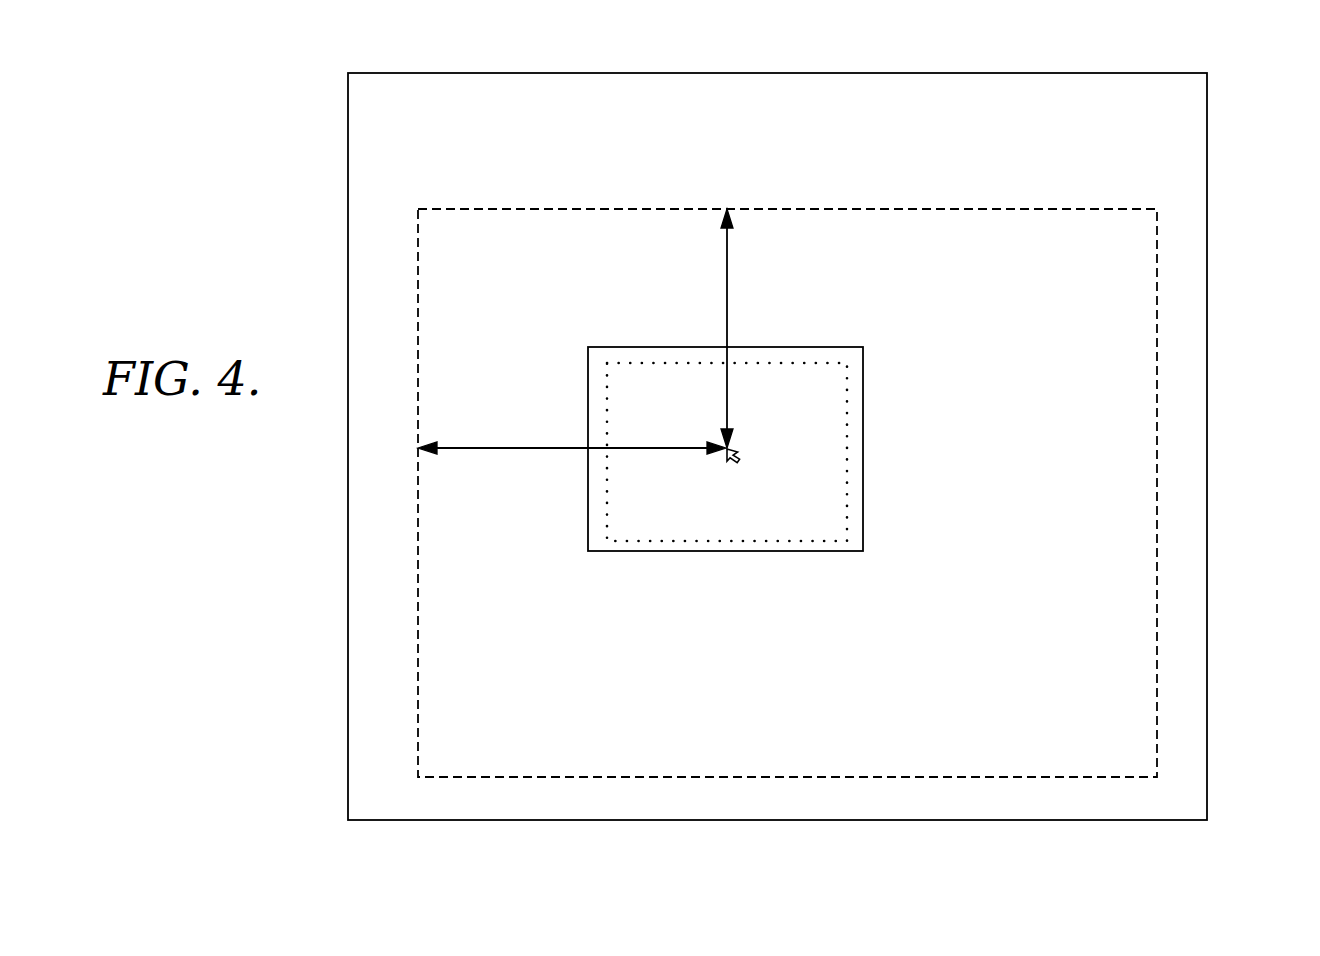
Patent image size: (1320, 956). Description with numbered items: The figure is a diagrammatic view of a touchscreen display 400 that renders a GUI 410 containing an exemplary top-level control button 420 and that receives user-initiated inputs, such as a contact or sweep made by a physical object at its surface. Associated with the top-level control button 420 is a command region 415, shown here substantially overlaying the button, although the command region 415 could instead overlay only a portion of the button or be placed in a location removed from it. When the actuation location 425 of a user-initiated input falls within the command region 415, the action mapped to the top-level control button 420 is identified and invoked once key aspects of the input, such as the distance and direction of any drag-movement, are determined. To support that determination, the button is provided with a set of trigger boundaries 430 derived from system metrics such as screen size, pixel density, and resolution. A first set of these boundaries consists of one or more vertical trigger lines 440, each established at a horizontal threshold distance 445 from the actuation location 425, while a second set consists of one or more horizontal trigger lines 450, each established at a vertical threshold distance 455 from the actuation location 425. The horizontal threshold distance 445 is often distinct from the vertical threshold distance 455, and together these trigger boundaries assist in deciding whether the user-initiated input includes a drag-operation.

The touchscreen display 400 is at (250, 500).
The GUI 410 is at (690, 116).
The command region 415 is at (642, 363).
The top-level control button 420 is at (864, 476).
The actuation location 425 is at (740, 474).
The set of trigger boundaries 430 is at (425, 182).
The vertical trigger lines 440 is at (1157, 313).
The horizontal threshold distance 445 is at (510, 450).
The horizontal trigger lines 450 is at (864, 777).
The vertical threshold distance 455 is at (727, 270).